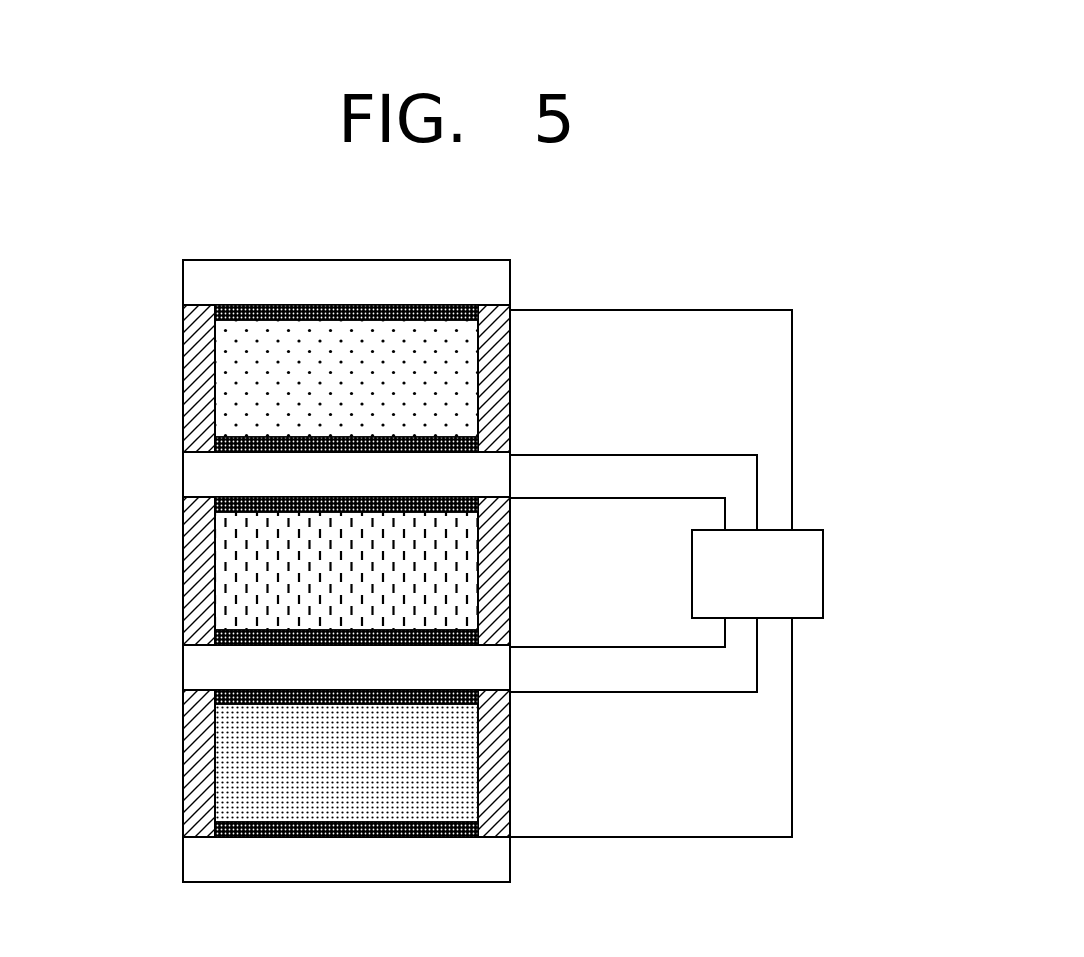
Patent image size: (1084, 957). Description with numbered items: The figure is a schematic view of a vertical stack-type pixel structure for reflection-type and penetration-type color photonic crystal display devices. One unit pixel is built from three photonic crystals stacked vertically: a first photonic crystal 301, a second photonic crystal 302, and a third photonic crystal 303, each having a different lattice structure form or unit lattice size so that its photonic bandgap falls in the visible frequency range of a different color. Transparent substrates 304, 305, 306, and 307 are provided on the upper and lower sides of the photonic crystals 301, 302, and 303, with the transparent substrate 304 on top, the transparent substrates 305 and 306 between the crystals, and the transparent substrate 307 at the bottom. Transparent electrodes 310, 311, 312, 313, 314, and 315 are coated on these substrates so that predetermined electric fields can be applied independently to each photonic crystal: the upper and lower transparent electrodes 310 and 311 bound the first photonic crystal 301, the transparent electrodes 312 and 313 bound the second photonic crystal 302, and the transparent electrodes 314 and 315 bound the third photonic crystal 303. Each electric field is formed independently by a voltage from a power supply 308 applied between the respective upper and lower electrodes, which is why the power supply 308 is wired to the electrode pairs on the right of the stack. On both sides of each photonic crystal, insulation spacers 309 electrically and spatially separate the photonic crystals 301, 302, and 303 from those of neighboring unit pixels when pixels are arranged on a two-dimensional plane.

The first photonic crystal 301 is at (228, 350).
The second photonic crystal 302 is at (238, 553).
The third photonic crystal 303 is at (238, 752).
The transparent substrate 304 is at (218, 277).
The transparent substrate 305 is at (205, 468).
The transparent substrate 306 is at (215, 669).
The transparent substrate 307 is at (218, 857).
The power supply 308 is at (797, 580).
The insulation spacer 309 is at (195, 412).
The transparent electrode 310 is at (463, 307).
The transparent electrode 311 is at (510, 423).
The transparent electrode 312 is at (510, 517).
The transparent electrode 313 is at (510, 630).
The transparent electrode 314 is at (483, 700).
The transparent electrode 315 is at (465, 838).